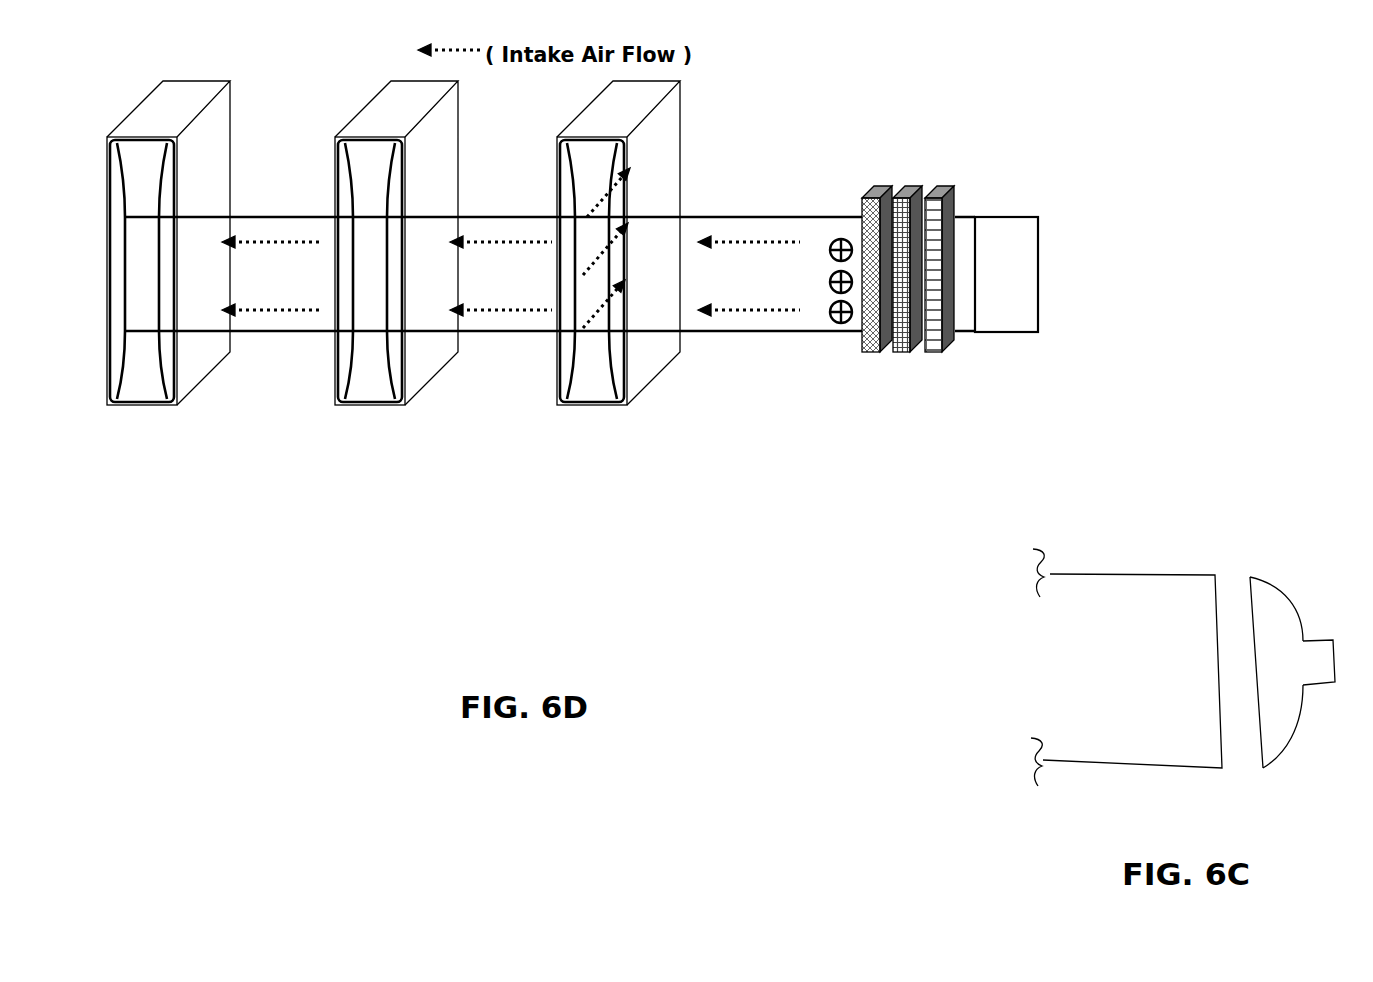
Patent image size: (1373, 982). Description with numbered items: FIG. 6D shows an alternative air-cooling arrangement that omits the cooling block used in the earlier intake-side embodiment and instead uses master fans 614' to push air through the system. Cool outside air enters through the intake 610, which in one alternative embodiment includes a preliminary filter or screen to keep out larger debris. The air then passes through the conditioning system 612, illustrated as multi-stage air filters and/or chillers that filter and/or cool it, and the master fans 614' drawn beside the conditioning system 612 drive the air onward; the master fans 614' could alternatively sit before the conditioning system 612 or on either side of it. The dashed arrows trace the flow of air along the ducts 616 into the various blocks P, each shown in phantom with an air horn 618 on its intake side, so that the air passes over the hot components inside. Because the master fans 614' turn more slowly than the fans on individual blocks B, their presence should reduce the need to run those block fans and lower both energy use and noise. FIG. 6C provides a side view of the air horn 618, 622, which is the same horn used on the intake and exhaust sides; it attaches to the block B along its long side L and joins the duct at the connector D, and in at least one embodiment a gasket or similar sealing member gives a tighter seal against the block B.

In FIG. 6D, the intake 610 is at (1006, 274).
In FIG. 6D, the conditioning system 612 is at (894, 393).
In FIG. 6D, the master fan(s) 614' is at (843, 218).
In FIG. 6D, the ducts 616 is at (747, 333).
In FIG. 6D, the air horn 618 is at (375, 405).
In FIG. 6C, the air horn 618 is at (1292, 570).
In FIG. 6C, the air horn 622 is at (1308, 643).
In FIG. 6D, the block P is at (107, 405).
In FIG. 6C, the block B is at (1100, 575).
In FIG. 6C, the long side L is at (1255, 720).
In FIG. 6C, the connector D is at (1333, 685).